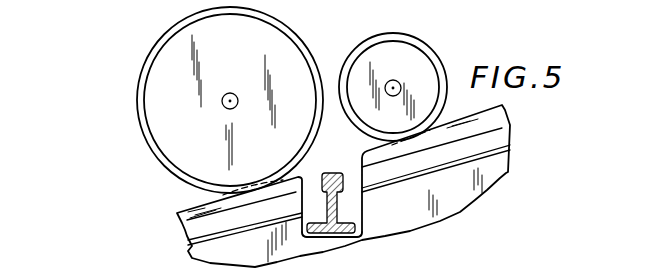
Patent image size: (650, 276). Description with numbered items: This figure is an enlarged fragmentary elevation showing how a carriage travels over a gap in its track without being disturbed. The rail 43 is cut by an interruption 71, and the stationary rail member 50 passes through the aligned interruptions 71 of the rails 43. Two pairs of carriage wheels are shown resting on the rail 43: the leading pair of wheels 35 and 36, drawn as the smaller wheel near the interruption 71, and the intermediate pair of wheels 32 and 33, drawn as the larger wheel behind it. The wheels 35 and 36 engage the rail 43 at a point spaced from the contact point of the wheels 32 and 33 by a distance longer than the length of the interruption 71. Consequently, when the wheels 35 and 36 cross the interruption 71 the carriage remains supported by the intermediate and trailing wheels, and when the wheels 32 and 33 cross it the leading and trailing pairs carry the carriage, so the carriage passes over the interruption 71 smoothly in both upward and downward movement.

The intermediate wheel 32 is at (194, 100).
The intermediate wheel 33 is at (141, 84).
The leading wheel 35 is at (393, 70).
The leading wheel 36 is at (412, 13).
The rail 43 is at (188, 207).
The stationary rail member 50 is at (331, 173).
The interruption 71 is at (355, 220).